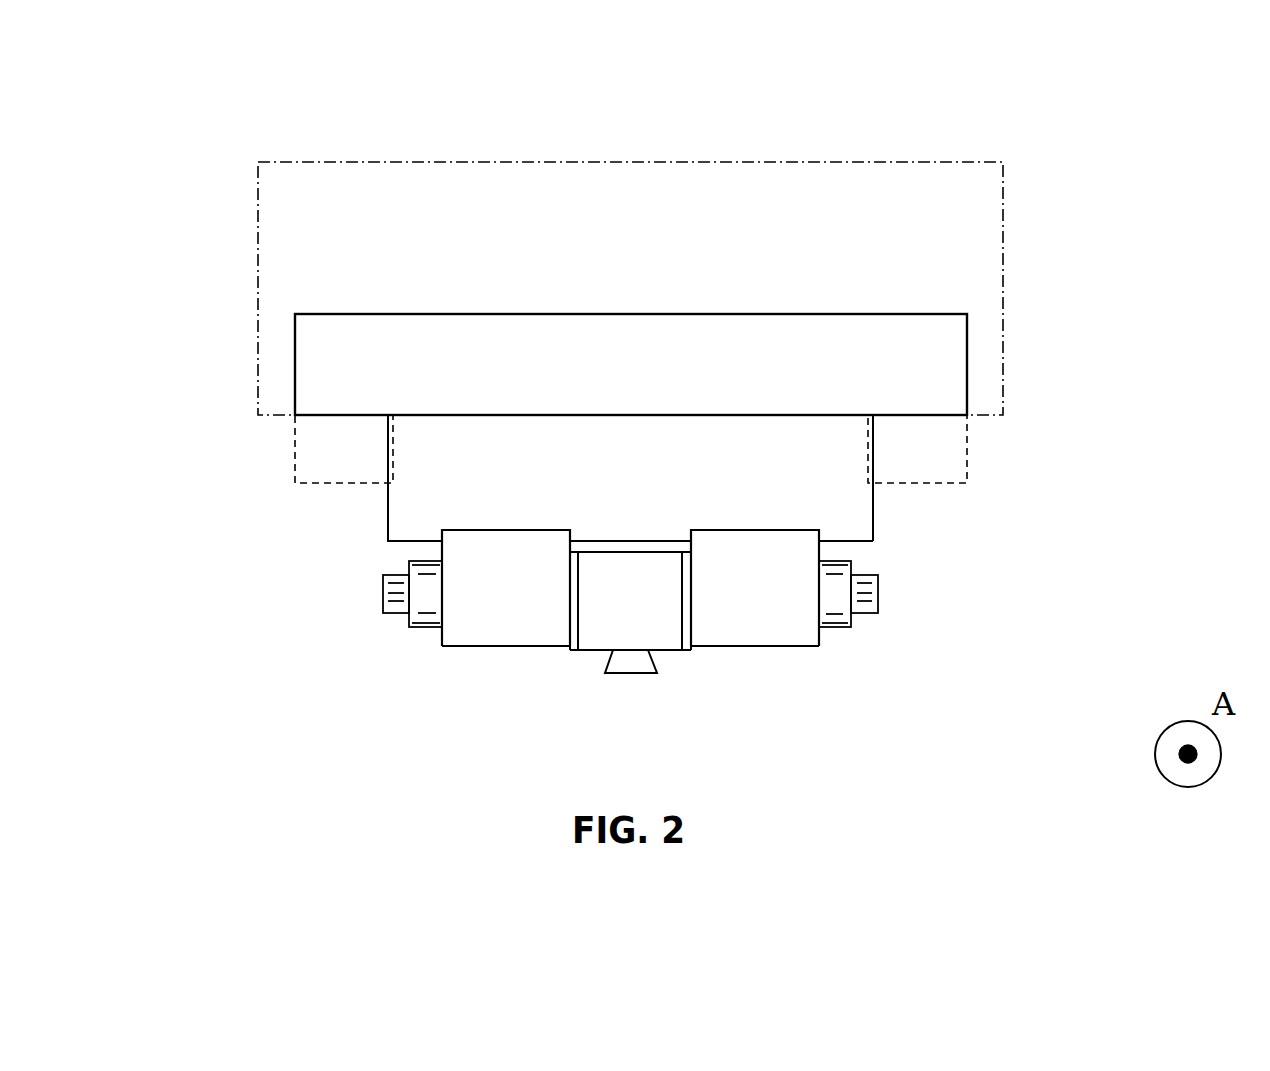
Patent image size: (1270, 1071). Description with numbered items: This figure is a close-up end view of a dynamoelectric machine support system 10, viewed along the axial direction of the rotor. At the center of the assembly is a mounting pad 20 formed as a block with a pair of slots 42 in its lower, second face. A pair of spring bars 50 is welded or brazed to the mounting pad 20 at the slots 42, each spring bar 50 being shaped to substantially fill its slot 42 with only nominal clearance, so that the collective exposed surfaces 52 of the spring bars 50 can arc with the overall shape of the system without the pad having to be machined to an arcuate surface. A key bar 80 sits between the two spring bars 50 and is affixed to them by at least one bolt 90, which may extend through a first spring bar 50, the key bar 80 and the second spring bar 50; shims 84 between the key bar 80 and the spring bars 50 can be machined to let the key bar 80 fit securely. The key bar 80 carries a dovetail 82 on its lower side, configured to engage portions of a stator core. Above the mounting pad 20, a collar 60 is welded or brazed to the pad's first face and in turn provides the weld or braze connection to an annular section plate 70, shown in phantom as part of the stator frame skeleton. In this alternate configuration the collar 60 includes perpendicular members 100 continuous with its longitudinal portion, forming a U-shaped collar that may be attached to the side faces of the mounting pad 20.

The support system 10 is at (258, 92).
The mounting pad 20 is at (645, 488).
The slots 42 is at (856, 553).
The spring bars 50 is at (519, 610).
The exposed surfaces 52 is at (463, 669).
The collar 60 is at (645, 374).
The section plate 70 is at (645, 256).
The key bar 80 is at (644, 610).
The dovetail 82 is at (623, 673).
The shims 84 is at (558, 669).
The bolt 90 is at (397, 603).
The perpendicular member 100 is at (272, 472).